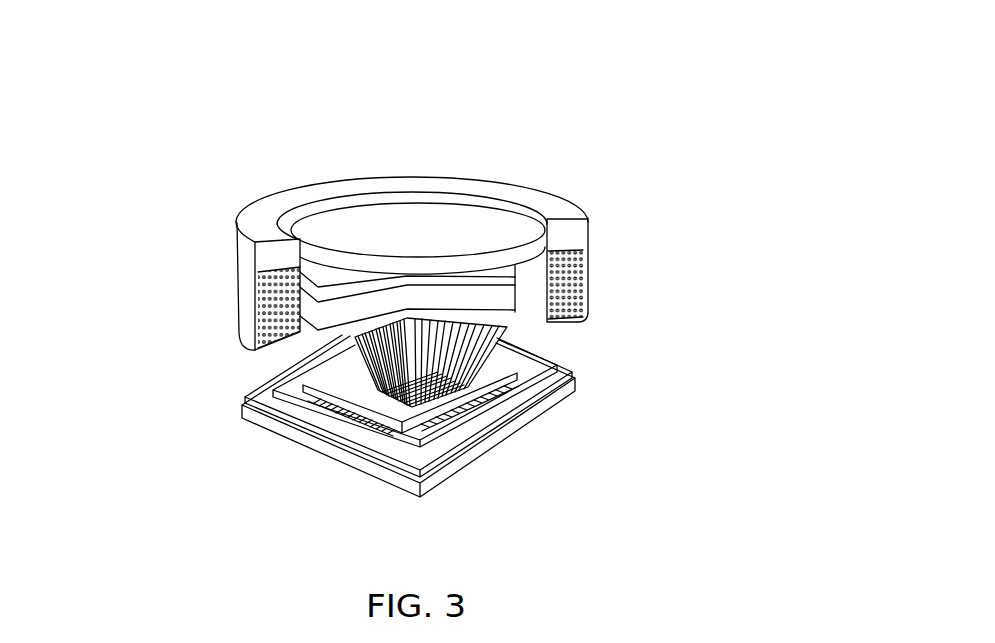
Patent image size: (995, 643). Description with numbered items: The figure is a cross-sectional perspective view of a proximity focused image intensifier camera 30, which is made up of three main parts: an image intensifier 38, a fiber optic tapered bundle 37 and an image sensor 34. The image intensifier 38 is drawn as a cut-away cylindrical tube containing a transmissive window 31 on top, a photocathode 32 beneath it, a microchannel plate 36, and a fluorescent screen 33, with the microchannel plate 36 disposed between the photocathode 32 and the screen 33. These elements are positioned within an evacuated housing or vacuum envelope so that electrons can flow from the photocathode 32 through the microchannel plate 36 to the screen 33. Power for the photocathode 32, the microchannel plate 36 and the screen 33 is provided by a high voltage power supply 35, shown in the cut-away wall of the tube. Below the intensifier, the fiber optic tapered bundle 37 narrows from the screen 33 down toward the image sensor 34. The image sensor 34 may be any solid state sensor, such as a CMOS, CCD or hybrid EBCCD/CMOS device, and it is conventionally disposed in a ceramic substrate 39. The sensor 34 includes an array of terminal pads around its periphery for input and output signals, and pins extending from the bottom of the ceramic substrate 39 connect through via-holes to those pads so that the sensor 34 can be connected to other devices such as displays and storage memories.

The proximity focused image intensifier camera 30 is at (559, 63).
The transmissive window 31 is at (354, 218).
The photocathode 32 is at (322, 276).
The fluorescent screen 33 is at (332, 329).
The image sensor 34 is at (410, 405).
The high voltage power supply 35 is at (570, 268).
The microchannel plate 36 is at (448, 283).
The fiber optic tapered bundle 37 is at (448, 348).
The image intensifier 38 is at (183, 212).
The ceramic substrate 39 is at (497, 442).